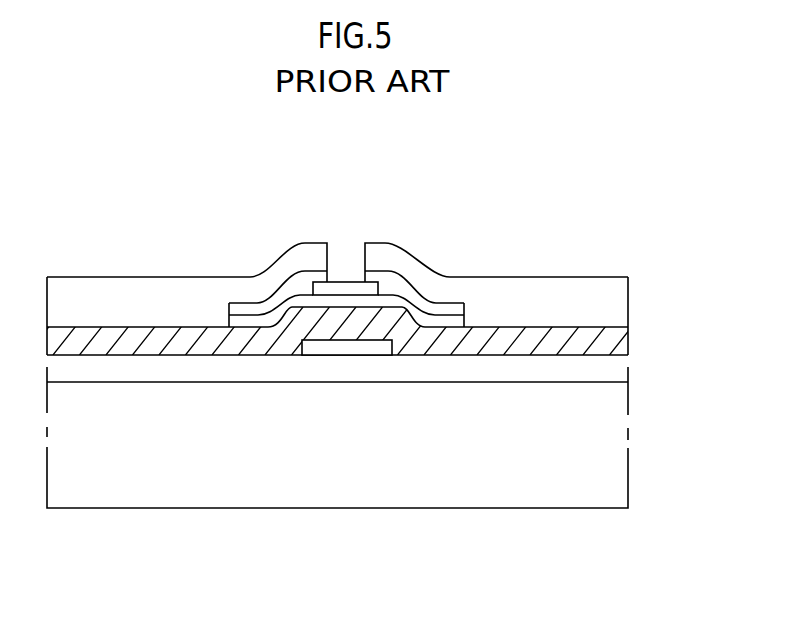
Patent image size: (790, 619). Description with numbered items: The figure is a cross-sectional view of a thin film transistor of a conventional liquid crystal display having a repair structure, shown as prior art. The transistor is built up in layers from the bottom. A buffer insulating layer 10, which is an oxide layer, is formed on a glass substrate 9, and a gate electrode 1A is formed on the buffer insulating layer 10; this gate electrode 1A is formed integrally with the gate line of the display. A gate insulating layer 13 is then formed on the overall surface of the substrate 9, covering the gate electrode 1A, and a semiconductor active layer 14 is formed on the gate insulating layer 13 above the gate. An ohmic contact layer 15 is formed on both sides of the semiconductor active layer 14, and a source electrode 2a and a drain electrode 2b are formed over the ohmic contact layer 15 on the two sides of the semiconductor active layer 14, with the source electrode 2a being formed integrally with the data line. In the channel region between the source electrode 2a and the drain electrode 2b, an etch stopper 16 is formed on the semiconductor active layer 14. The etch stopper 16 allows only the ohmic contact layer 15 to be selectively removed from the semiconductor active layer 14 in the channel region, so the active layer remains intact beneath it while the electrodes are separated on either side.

The glass substrate 9 is at (605, 450).
The buffer insulating layer 10 is at (607, 365).
The gate electrode 1A is at (340, 345).
The gate insulating layer 13 is at (610, 342).
The semiconductor active layer 14 is at (447, 320).
The ohmic contact layer 15 is at (238, 308).
The etch stopper 16 is at (342, 288).
The source electrode 2a is at (145, 290).
The drain electrode 2b is at (532, 302).